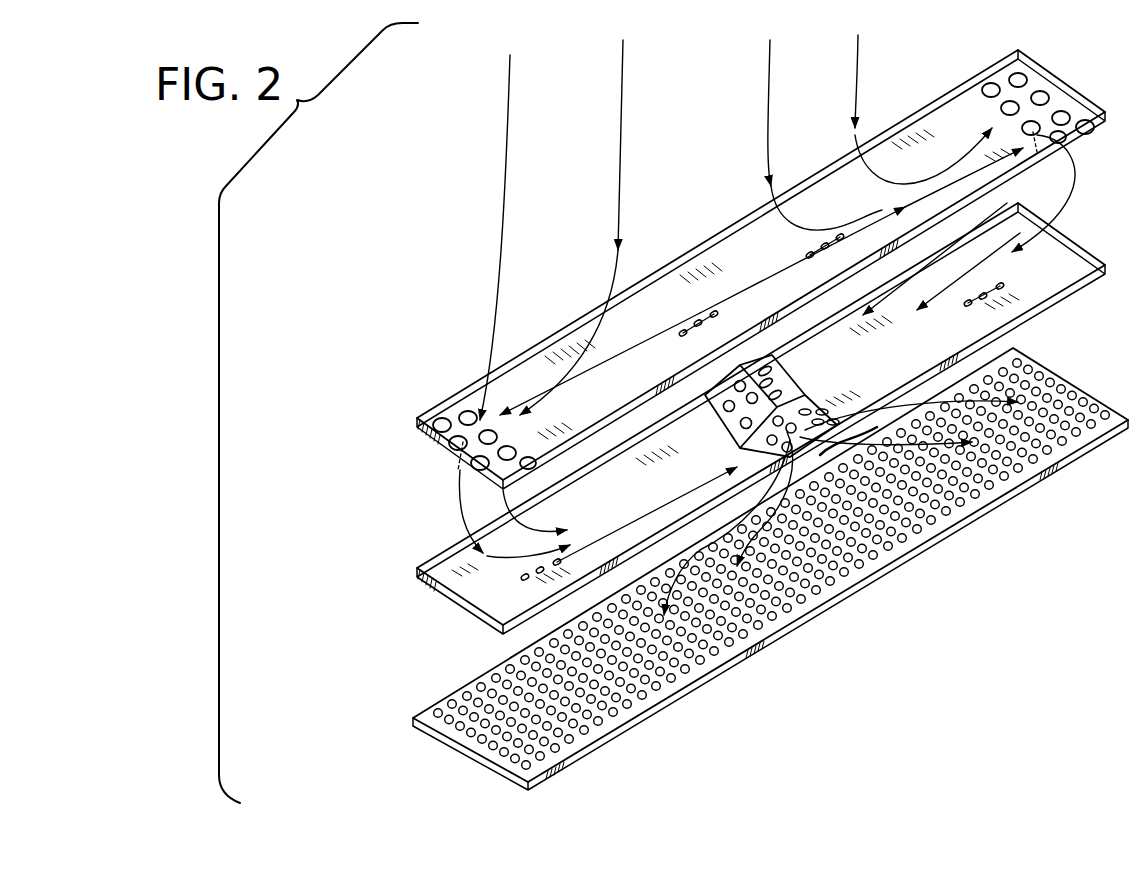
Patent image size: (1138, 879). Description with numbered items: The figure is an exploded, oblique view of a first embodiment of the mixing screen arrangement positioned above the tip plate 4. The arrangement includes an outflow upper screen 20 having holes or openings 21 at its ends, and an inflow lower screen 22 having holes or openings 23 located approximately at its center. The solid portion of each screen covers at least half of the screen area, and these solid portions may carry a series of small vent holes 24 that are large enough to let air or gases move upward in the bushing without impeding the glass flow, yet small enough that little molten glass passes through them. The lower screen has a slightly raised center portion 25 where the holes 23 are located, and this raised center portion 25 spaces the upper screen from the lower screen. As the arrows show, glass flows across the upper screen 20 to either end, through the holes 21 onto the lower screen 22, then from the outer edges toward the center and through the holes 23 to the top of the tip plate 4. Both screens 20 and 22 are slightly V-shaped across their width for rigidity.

The tip plate 4 is at (735, 653).
The outflow upper screen 20 is at (570, 347).
The holes or openings 21 is at (443, 426).
The inflow lower screen 22 is at (447, 573).
The holes or openings 23 is at (782, 385).
The small vent holes 24 is at (698, 323).
The raised center portion 25 is at (877, 427).